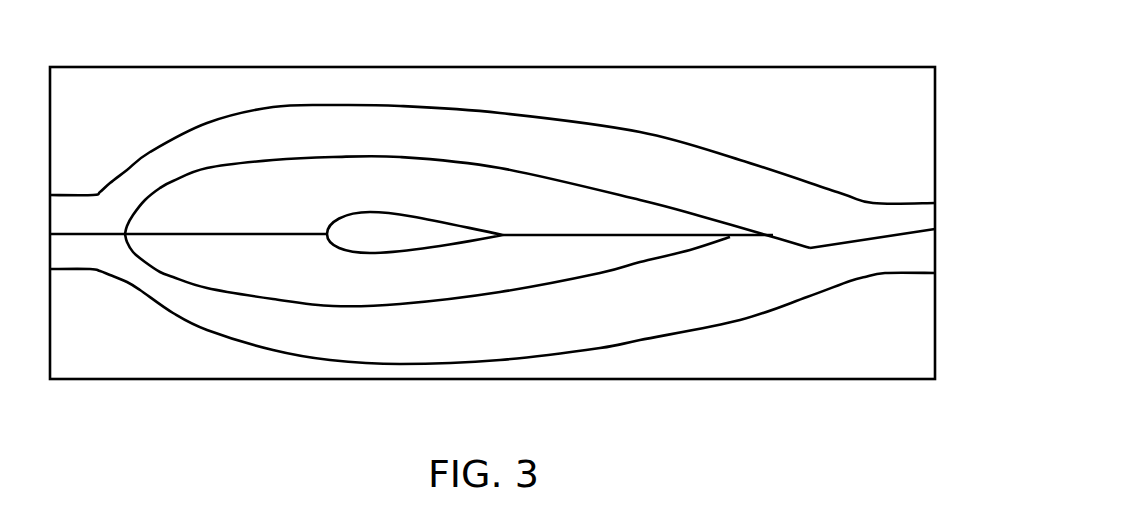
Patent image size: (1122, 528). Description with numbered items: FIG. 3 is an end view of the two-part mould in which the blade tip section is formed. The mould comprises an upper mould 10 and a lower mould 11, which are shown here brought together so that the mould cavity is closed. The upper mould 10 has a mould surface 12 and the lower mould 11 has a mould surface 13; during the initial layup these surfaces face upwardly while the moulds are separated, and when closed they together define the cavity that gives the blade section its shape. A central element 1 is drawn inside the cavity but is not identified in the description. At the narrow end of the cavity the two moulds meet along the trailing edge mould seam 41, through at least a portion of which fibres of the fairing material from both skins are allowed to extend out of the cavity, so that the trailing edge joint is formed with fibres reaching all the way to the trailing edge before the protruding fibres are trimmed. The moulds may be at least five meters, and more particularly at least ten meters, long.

The core 1 is at (397, 230).
The upper mould 10 is at (627, 78).
The lower mould 11 is at (642, 360).
The mould surface 12 is at (290, 162).
The mould surface 13 is at (270, 298).
The trailing edge mould seam 41 is at (936, 228).